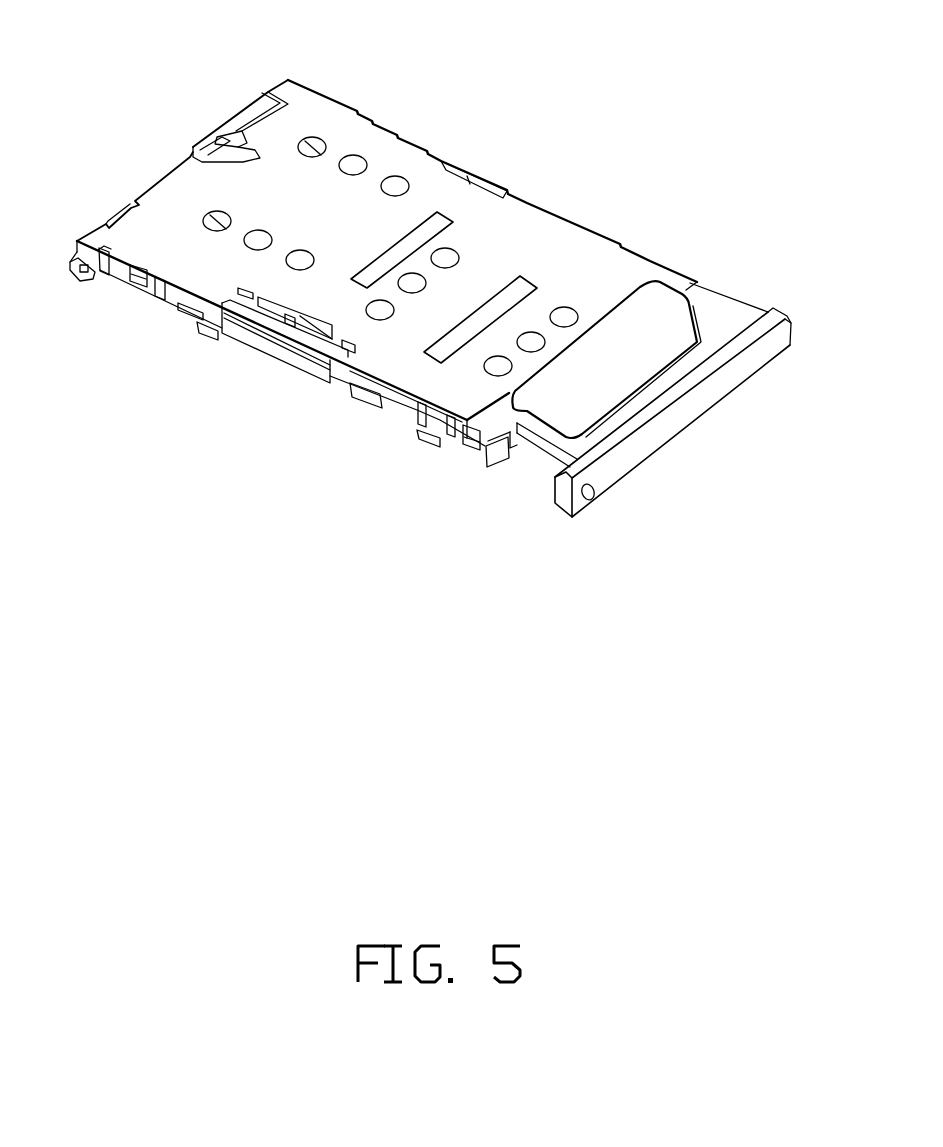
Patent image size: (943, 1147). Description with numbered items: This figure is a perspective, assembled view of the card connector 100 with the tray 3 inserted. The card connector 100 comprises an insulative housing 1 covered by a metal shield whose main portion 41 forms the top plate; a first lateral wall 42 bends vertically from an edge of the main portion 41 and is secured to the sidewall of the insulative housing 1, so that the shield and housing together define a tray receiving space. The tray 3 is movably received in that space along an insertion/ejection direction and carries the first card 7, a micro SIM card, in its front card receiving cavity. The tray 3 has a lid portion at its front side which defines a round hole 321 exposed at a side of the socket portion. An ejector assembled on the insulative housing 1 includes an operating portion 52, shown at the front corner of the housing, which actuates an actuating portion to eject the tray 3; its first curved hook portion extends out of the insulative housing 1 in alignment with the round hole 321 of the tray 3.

The card connector 100 is at (547, 170).
The main portion 41 is at (308, 112).
The first lateral wall 42 is at (118, 277).
The insulative housing 1 is at (265, 346).
The operating portion 52 is at (500, 452).
The first card 7 is at (608, 330).
The tray 3 is at (670, 423).
The round hole 321 is at (593, 497).